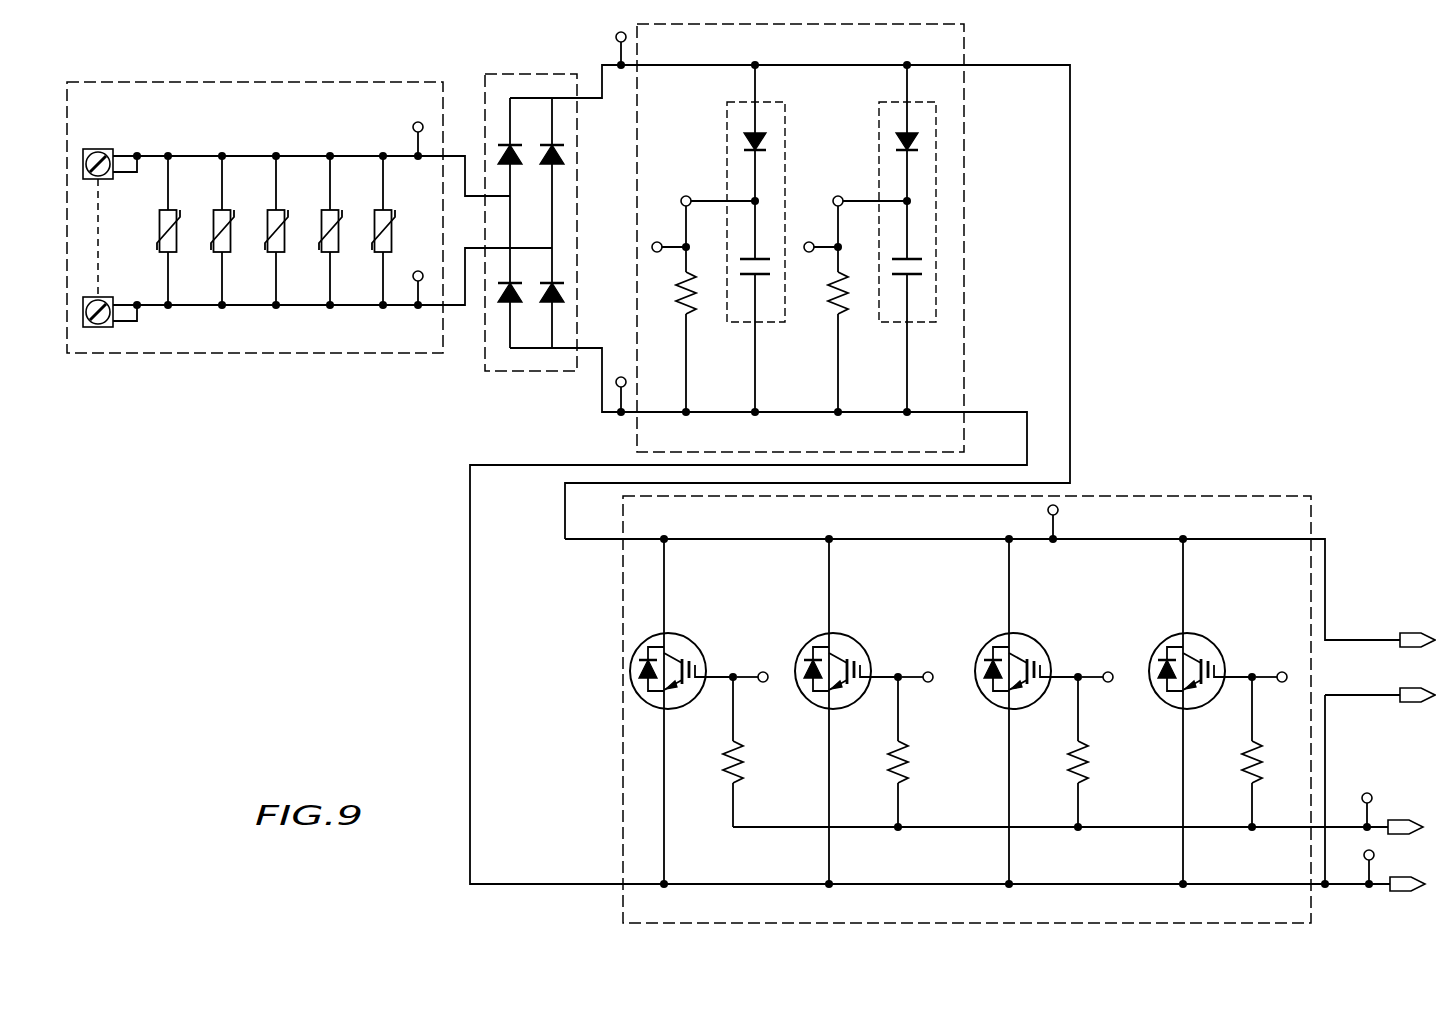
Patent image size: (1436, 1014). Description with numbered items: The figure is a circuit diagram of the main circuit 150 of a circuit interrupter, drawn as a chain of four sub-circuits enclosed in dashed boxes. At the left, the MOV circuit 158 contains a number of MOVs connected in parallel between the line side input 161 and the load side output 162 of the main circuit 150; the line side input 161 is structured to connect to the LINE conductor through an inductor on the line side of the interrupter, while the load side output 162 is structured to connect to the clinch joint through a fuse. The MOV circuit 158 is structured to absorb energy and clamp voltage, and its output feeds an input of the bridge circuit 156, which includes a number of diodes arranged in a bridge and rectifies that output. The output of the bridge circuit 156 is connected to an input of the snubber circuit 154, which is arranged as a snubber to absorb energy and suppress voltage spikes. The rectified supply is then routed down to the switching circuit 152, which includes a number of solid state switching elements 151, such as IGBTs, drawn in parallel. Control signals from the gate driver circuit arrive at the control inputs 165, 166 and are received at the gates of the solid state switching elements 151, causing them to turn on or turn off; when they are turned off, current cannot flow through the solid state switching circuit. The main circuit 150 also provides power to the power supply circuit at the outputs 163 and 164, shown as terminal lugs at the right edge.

The main circuit 150 is at (110, 40).
The solid state switching elements 151 is at (695, 644).
The switching circuit 152 is at (1193, 495).
The snubber circuit 154 is at (964, 46).
The bridge circuit 156 is at (517, 74).
The MOV circuit 158 is at (248, 355).
The line side input 161 is at (97, 149).
The load side output 162 is at (97, 297).
The output 163 is at (1415, 633).
The output 164 is at (1405, 703).
The control input 165 is at (1403, 820).
The control input 166 is at (1405, 893).